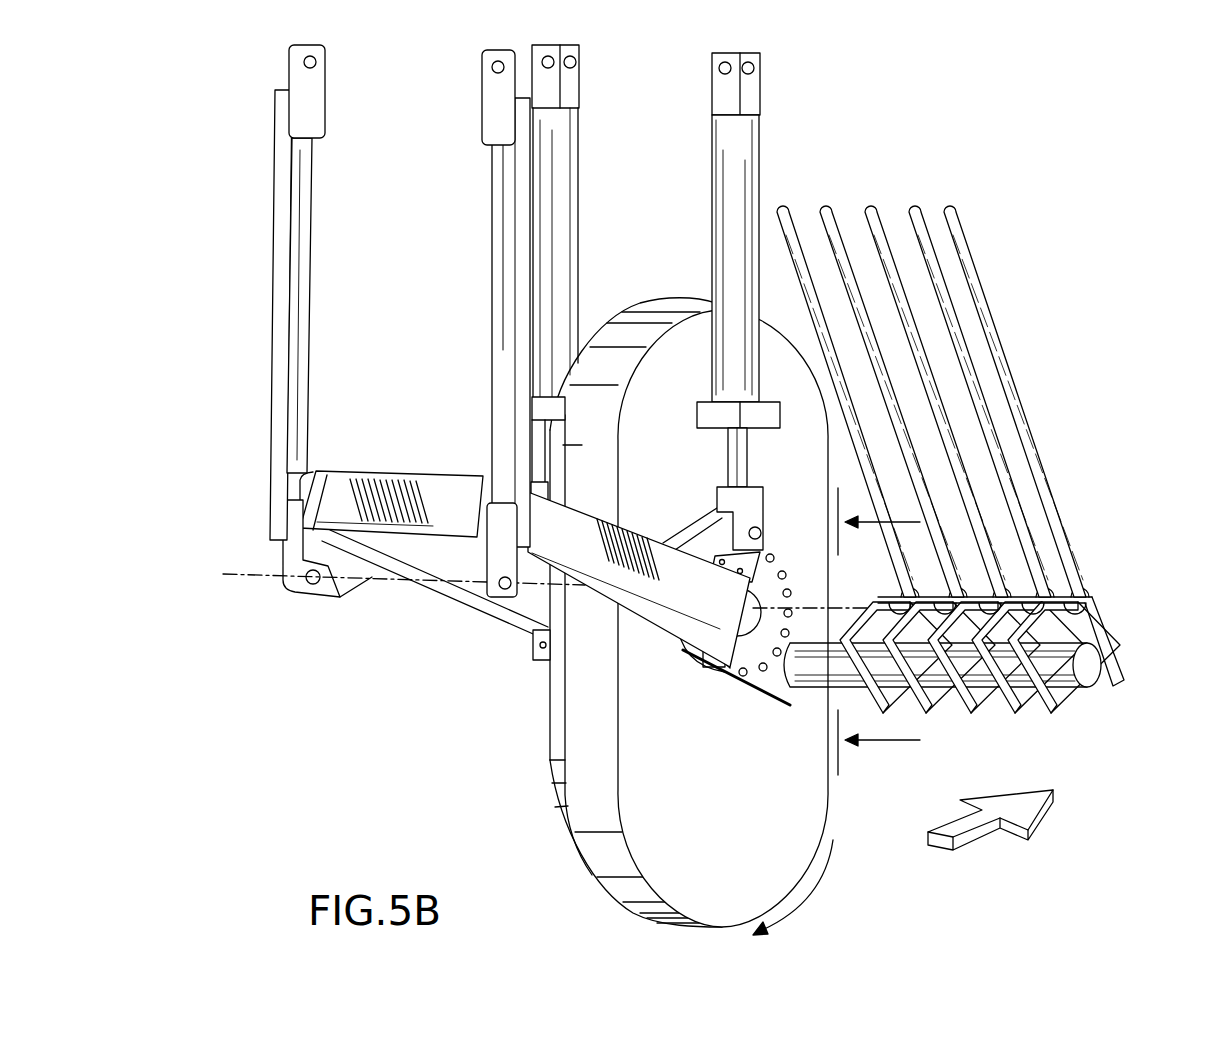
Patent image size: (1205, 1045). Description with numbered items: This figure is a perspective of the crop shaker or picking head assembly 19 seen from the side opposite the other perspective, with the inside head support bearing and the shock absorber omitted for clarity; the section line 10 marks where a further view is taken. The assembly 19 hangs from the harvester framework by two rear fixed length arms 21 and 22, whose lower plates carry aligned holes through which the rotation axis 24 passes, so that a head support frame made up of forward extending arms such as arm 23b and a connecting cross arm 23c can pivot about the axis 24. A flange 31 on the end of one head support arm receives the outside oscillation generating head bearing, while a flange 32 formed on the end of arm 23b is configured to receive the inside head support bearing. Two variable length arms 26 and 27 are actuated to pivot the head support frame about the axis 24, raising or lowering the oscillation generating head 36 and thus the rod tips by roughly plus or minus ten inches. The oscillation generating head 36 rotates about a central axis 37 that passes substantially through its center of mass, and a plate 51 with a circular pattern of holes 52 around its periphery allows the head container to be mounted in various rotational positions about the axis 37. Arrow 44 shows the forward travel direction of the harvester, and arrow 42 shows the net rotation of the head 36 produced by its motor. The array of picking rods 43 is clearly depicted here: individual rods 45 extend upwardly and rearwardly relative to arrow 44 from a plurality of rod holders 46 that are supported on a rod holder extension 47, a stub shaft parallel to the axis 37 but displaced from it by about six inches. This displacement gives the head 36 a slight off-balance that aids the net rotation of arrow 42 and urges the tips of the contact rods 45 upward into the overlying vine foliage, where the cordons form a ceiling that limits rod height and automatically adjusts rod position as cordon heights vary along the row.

The section line 10 is at (879, 635).
The shaker head assembly 19 is at (820, 147).
The rear fixed length arm 21 is at (278, 254).
The rear fixed length arm 22 is at (492, 208).
The forward extending arm 23b is at (588, 507).
The connecting cross arm 23c is at (372, 473).
The rotation axis 24 is at (250, 575).
The variable length arm 26 is at (580, 150).
The variable length arm 27 is at (712, 222).
The flange 31 is at (533, 650).
The flange 32 is at (717, 650).
The oscillation generating head 36 is at (602, 856).
The axis 37 is at (817, 606).
The arrow 42 is at (810, 890).
The array of picking rods 43 is at (1098, 549).
The arrow 44 is at (975, 843).
The rods 45 is at (968, 254).
The rod holders 46 is at (1060, 716).
The rod holder extension 47 is at (818, 683).
The plate 51 is at (745, 674).
The holes 52 is at (760, 692).